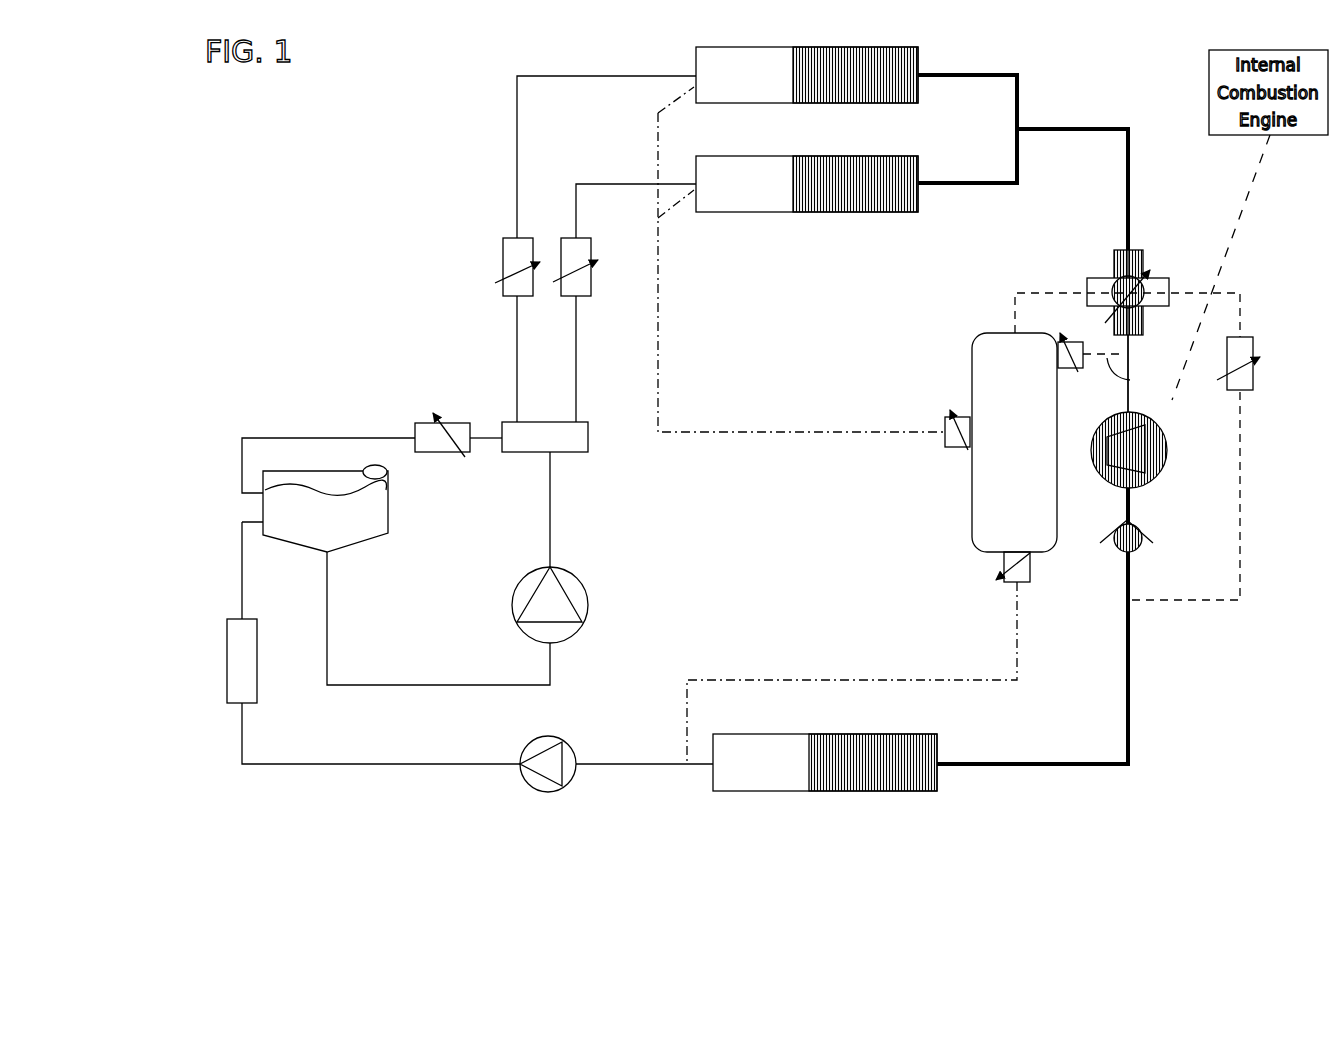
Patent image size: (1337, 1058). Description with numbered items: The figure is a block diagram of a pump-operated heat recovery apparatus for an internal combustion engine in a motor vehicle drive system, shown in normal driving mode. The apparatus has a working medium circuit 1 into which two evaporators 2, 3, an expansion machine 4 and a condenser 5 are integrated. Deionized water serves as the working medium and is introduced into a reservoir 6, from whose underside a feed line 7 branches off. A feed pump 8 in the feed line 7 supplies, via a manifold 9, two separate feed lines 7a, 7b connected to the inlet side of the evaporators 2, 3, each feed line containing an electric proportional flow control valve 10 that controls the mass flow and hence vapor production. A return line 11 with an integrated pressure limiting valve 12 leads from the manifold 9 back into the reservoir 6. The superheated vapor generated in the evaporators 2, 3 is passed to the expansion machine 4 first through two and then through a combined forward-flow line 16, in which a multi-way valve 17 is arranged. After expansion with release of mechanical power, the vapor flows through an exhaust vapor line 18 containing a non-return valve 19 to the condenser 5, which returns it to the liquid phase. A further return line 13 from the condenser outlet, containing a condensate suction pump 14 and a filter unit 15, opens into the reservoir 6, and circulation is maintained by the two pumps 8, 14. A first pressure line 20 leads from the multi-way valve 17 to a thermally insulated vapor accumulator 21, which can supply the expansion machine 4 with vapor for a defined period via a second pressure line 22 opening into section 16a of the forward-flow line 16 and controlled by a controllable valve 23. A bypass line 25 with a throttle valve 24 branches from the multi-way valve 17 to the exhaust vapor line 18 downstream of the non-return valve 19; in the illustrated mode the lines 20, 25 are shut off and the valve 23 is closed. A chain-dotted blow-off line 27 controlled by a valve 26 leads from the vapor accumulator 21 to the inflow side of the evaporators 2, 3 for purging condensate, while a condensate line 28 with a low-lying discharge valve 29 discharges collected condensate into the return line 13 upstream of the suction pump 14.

The working medium circuit 1 is at (443, 340).
The evaporator 2 is at (908, 103).
The evaporator 3 is at (880, 212).
The expansion machine 4 is at (1176, 474).
The condenser 5 is at (908, 791).
The reservoir 6 is at (388, 510).
The feed line 7 is at (400, 685).
The feed line 7a is at (517, 152).
The feed line 7b is at (576, 184).
The feed pump 8 is at (588, 588).
The manifold 9 is at (588, 440).
The electric proportional flow control valve 10 is at (503, 254).
The return line 11 is at (300, 438).
The pressure limiting valve 12 is at (463, 455).
The return line 13 is at (430, 764).
The condensate suction pump 14 is at (566, 784).
The filter unit 15 is at (257, 670).
The forward-flow line 16 is at (978, 180).
The section of forward-flow line 16a is at (1130, 393).
The multi-way valve 17 is at (1170, 256).
The exhaust vapor line 18 is at (1128, 680).
The non-return valve 19 is at (1114, 552).
The first pressure line 20 is at (1033, 293).
The vapor accumulator 21 is at (1014, 442).
The second pressure line 22 is at (1130, 380).
The controllable valve 23 is at (1065, 370).
The throttle valve 24 is at (1258, 366).
The bypass line 25 is at (1240, 430).
The valve 26 is at (963, 447).
The blow-off line 27 is at (773, 432).
The condensate line 28 is at (880, 680).
The discharge valve 29 is at (973, 573).